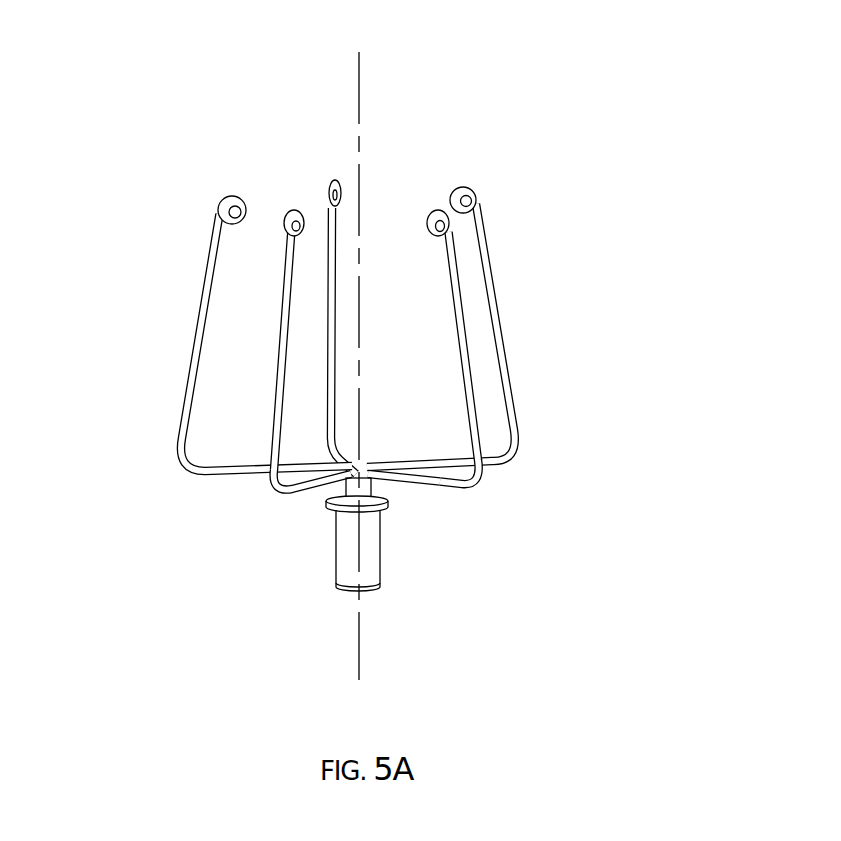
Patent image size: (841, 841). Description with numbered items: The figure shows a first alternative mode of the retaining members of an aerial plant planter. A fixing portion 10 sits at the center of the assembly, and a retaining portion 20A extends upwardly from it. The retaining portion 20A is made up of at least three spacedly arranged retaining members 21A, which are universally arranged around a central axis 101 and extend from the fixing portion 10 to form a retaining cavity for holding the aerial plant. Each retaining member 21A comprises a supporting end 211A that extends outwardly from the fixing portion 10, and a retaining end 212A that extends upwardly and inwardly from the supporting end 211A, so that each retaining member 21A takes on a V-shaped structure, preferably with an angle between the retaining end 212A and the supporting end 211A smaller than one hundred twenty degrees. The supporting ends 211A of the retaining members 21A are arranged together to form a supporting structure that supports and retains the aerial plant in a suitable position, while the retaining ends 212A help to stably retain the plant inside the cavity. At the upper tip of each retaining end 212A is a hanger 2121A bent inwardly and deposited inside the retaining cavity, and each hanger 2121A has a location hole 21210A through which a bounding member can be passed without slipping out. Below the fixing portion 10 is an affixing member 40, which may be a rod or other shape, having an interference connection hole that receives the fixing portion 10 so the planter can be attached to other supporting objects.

The axis 101 is at (378, 353).
The retaining portion 20A is at (371, 348).
The retaining member 21A is at (547, 296).
The retaining end 212A is at (462, 333).
The supporting end 211A is at (431, 486).
The hanger 2121A is at (588, 169).
The location hole 21210A is at (478, 203).
The fixing portion 10 is at (333, 505).
The affixing member 40 is at (345, 555).